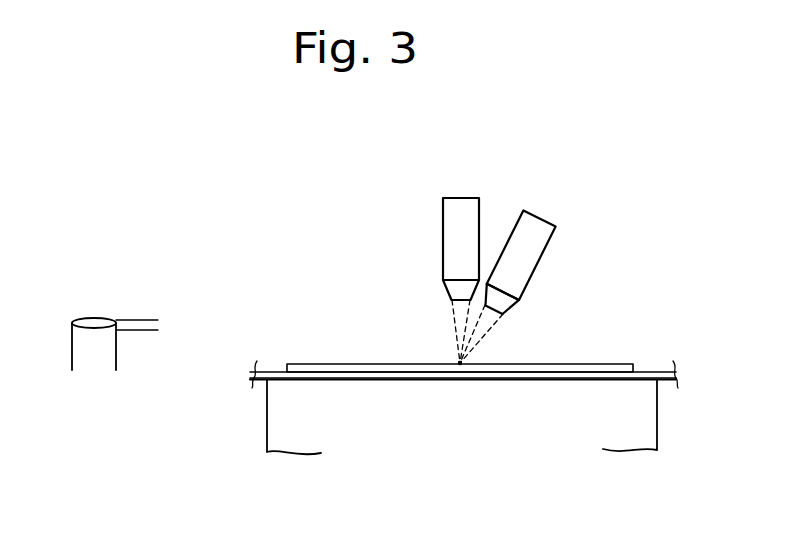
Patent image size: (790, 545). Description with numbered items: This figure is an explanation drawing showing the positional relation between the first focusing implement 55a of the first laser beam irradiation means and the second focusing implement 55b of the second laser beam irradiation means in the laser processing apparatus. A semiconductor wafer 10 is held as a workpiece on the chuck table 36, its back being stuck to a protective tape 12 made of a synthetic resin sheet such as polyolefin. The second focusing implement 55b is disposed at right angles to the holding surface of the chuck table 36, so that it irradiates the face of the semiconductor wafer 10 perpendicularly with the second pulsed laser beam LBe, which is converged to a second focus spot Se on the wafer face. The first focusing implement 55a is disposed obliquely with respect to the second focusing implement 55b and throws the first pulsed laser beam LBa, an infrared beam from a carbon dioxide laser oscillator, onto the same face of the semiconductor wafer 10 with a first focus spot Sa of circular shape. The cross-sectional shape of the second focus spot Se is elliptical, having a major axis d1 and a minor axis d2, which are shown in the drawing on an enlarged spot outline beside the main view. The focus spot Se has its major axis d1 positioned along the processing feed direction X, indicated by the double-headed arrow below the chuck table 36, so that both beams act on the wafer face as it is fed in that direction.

The second focusing implement 55b is at (458, 194).
The first focusing implement 55a is at (543, 210).
The semiconductor wafer 10 is at (618, 358).
The protective tape 12 is at (664, 370).
The chuck table 36 is at (287, 420).
The second pulsed laser beam LBe is at (453, 322).
The first pulsed laser beam LBa is at (483, 327).
The second focus spot Se is at (460, 363).
The first focus spot Sa is at (460, 363).
The major axis d1 is at (145, 358).
The minor axis d2 is at (338, 323).
The processing feed direction X is at (413, 479).